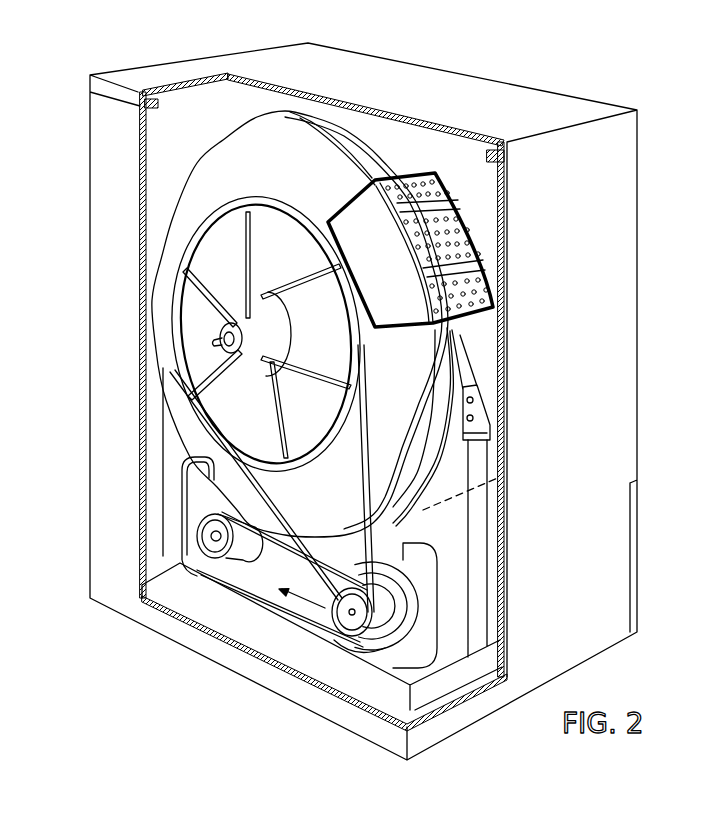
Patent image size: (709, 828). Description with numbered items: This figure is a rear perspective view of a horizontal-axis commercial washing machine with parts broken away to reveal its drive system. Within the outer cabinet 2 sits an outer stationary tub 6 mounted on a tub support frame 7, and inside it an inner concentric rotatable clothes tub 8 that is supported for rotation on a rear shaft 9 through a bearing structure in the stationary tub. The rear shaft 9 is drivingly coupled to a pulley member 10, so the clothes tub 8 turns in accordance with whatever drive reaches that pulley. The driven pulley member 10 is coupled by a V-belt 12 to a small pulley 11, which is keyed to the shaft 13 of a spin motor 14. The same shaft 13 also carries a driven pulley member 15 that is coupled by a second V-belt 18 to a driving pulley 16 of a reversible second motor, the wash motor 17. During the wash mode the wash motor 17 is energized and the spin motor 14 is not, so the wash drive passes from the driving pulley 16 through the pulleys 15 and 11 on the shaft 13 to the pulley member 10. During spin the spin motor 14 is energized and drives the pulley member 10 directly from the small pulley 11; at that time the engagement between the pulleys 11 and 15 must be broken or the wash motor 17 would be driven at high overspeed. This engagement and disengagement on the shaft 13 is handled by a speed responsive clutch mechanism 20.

The outer cabinet 2 is at (622, 189).
The outer stationary tub 6 is at (203, 170).
The tub support frame 7 is at (452, 653).
The inner concentric rotatable clothes tub 8 is at (453, 208).
The rear shaft 9 is at (218, 344).
The pulley member 10 is at (262, 206).
The small pulley 11 is at (357, 628).
The V-belt 12 is at (375, 478).
The shaft 13 is at (345, 580).
The spin motor 14 is at (430, 606).
The driven pulley member 15 is at (383, 593).
The driving pulley 16 is at (211, 542).
The wash motor 17 is at (232, 496).
The V-belt 18 is at (267, 583).
The speed responsive clutch mechanism 20 is at (386, 650).